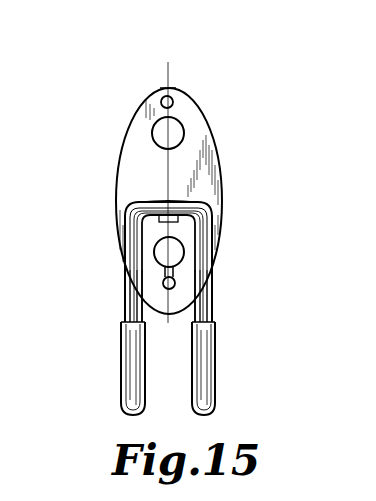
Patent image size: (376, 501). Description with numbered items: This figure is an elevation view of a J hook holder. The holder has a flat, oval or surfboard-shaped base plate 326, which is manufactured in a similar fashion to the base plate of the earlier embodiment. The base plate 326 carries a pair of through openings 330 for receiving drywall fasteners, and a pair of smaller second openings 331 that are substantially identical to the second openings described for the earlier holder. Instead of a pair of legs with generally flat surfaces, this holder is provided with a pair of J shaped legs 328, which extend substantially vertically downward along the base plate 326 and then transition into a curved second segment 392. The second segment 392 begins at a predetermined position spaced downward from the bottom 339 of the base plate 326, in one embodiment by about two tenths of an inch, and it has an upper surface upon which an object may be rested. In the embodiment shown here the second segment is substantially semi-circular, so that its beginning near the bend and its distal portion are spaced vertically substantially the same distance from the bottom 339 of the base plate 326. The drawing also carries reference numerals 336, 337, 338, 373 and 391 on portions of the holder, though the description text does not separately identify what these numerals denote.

The base plate 326 is at (203, 146).
The J shaped legs 328 is at (125, 300).
The through openings 330 is at (153, 133).
The second openings 331 is at (162, 100).
The top wall of clip 336 is at (170, 198).
The inner opening 337 is at (160, 225).
The top end 338 is at (167, 88).
The bottom of base plate 339 is at (125, 317).
The tip 373 is at (128, 397).
The outer shell 391 is at (183, 204).
The second segment 392 is at (125, 261).